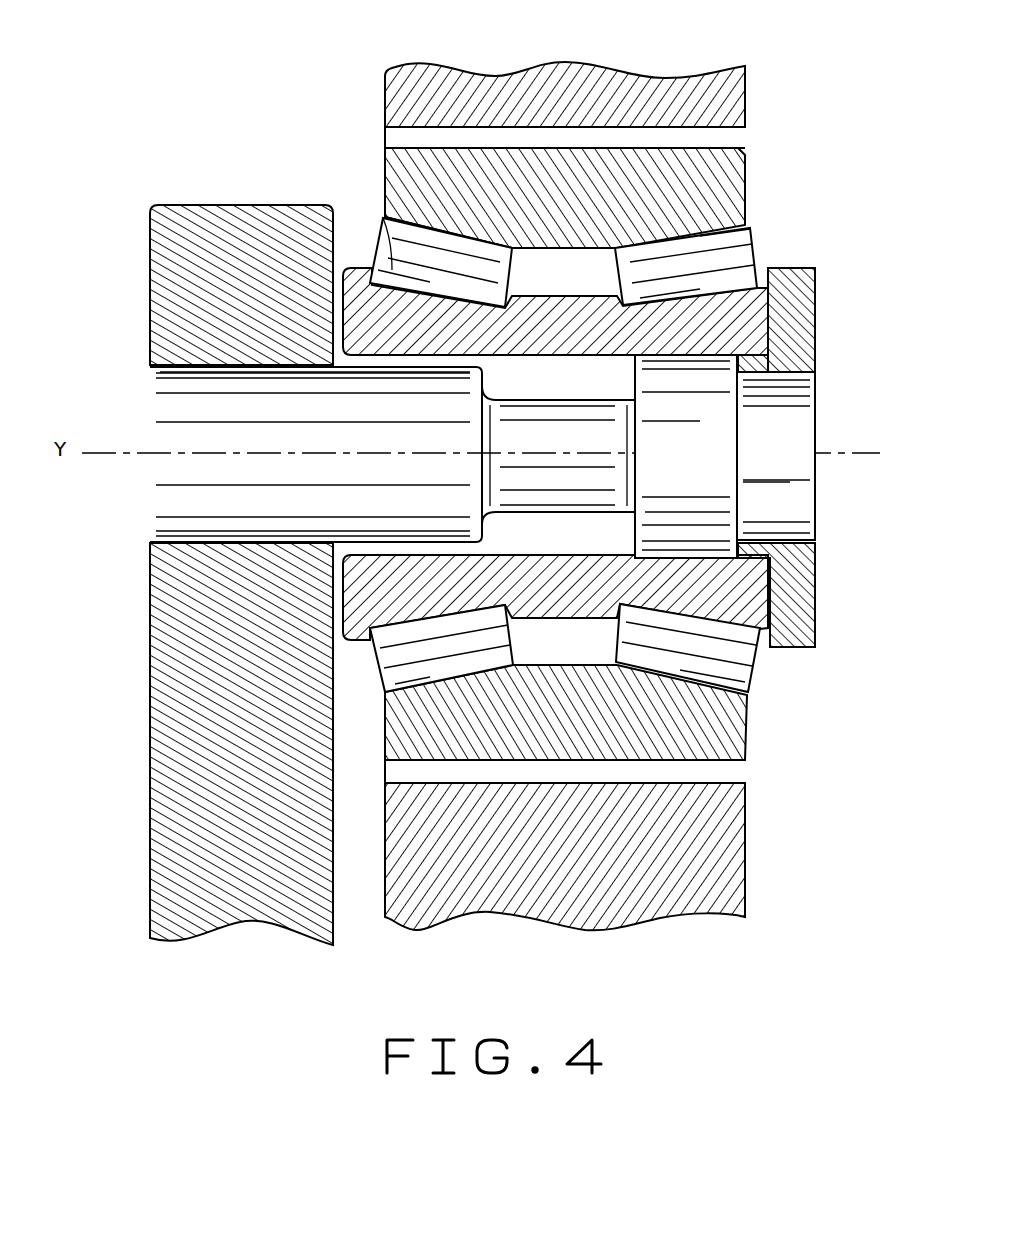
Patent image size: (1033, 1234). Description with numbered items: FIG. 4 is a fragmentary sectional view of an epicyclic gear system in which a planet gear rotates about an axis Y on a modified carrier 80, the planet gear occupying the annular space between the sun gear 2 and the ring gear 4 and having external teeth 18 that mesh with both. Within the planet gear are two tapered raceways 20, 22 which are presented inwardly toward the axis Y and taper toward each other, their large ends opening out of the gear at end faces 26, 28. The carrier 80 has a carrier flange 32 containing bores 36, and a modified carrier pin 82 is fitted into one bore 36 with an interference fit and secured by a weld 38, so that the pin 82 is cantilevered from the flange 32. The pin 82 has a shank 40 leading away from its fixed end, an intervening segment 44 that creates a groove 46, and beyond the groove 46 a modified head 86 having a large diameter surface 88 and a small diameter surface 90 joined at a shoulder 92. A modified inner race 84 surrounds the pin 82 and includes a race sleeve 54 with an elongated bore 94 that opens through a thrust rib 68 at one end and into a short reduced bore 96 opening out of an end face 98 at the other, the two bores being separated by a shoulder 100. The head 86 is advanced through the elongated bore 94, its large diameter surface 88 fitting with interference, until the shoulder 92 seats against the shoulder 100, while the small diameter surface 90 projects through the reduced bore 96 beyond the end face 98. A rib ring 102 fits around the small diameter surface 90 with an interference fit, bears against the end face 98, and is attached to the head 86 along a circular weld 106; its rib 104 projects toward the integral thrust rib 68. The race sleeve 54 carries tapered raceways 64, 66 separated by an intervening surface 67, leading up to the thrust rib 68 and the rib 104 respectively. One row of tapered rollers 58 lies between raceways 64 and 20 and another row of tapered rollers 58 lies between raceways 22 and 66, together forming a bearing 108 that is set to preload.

The sun gear 2 is at (642, 898).
The ring gear 4 is at (548, 82).
The external teeth 18 is at (592, 138).
The tapered raceway 20 is at (385, 200).
The tapered raceway 22 is at (733, 238).
The end face 26 is at (550, 175).
The end face 28 is at (745, 163).
The carrier flange 32 is at (207, 739).
The bore 36 is at (180, 368).
The weld 38 is at (152, 540).
The shank 40 is at (316, 454).
The intervening segment 44 is at (558, 455).
The groove 46 is at (555, 353).
The race sleeve 54 is at (420, 340).
The tapered rollers 58 is at (402, 673).
The tapered raceway 64 is at (383, 227).
The tapered raceway 66 is at (723, 293).
The intervening surface 67 is at (547, 618).
The thrust rib 68 is at (358, 640).
The carrier 80 is at (190, 160).
The carrier pin 82 is at (183, 475).
The inner race 84 is at (819, 634).
The head 86 is at (650, 508).
The large diameter surface 88 is at (817, 456).
The small diameter surface 90 is at (793, 397).
The shoulder 92 is at (752, 562).
The elongated bore 94 is at (620, 590).
The reduced bore 96 is at (753, 540).
The end face 98 is at (823, 599).
The shoulder 100 is at (647, 456).
The rib ring 102 is at (822, 298).
The rib 104 is at (772, 267).
The circular weld 106 is at (814, 372).
The bearing 108 is at (784, 661).